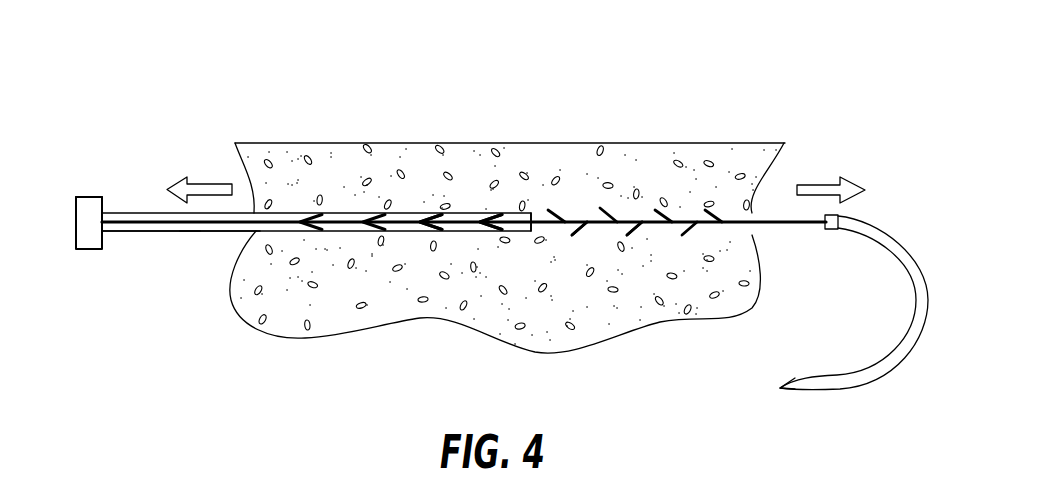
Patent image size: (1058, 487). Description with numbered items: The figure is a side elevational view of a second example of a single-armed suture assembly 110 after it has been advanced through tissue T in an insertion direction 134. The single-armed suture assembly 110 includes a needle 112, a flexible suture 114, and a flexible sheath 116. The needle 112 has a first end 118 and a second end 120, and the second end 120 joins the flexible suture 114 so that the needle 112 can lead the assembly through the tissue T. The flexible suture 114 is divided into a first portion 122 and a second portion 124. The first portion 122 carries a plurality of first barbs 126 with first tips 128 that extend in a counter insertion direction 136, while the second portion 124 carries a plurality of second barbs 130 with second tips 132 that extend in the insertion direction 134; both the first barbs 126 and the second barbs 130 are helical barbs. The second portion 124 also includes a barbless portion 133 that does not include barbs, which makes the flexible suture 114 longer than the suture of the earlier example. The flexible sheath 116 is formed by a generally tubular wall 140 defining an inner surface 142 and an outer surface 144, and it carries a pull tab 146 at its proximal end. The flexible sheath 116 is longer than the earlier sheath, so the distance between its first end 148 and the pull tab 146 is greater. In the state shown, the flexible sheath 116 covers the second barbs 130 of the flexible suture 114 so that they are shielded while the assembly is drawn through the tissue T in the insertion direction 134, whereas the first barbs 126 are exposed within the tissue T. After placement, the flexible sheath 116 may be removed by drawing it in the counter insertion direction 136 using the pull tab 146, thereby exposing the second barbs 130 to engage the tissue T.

The single-armed suture assembly 110 is at (505, 229).
The needle 112 is at (907, 243).
The flexible suture 114 is at (515, 167).
The flexible sheath 116 is at (82, 259).
The first end 118 is at (785, 388).
The second end 120 is at (818, 230).
The first portion 122 is at (620, 194).
The second portion 124 is at (385, 196).
The first barbs 126 is at (647, 237).
The first tips 128 is at (720, 213).
The second barbs 130 is at (422, 236).
The second tips 132 is at (380, 212).
The barbless portion 133 is at (195, 233).
The insertion direction 134 is at (824, 186).
The counter insertion direction 136 is at (212, 187).
The tubular wall 140 is at (131, 212).
The inner surface 142 is at (166, 226).
The outer surface 144 is at (124, 233).
The pull tab 146 is at (86, 202).
The first end 148 is at (538, 210).
The tissue T is at (507, 211).